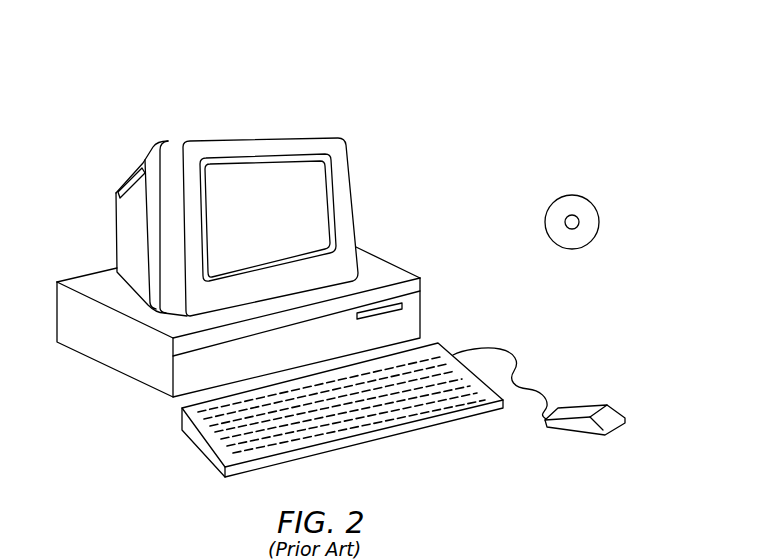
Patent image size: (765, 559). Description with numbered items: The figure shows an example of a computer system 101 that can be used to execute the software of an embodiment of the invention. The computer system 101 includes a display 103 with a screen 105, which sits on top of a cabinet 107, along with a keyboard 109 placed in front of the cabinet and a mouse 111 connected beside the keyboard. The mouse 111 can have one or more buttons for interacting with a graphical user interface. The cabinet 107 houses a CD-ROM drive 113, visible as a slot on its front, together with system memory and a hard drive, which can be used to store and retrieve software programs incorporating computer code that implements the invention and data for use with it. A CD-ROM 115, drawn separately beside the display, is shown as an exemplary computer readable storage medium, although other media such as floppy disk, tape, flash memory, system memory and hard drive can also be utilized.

The computer system 101 is at (502, 148).
The display 103 is at (352, 230).
The screen 105 is at (327, 187).
The cabinet 107 is at (137, 380).
The keyboard 109 is at (382, 440).
The mouse 111 is at (607, 407).
The CD-ROM drive 113 is at (403, 302).
The CD-ROM 115 is at (583, 195).